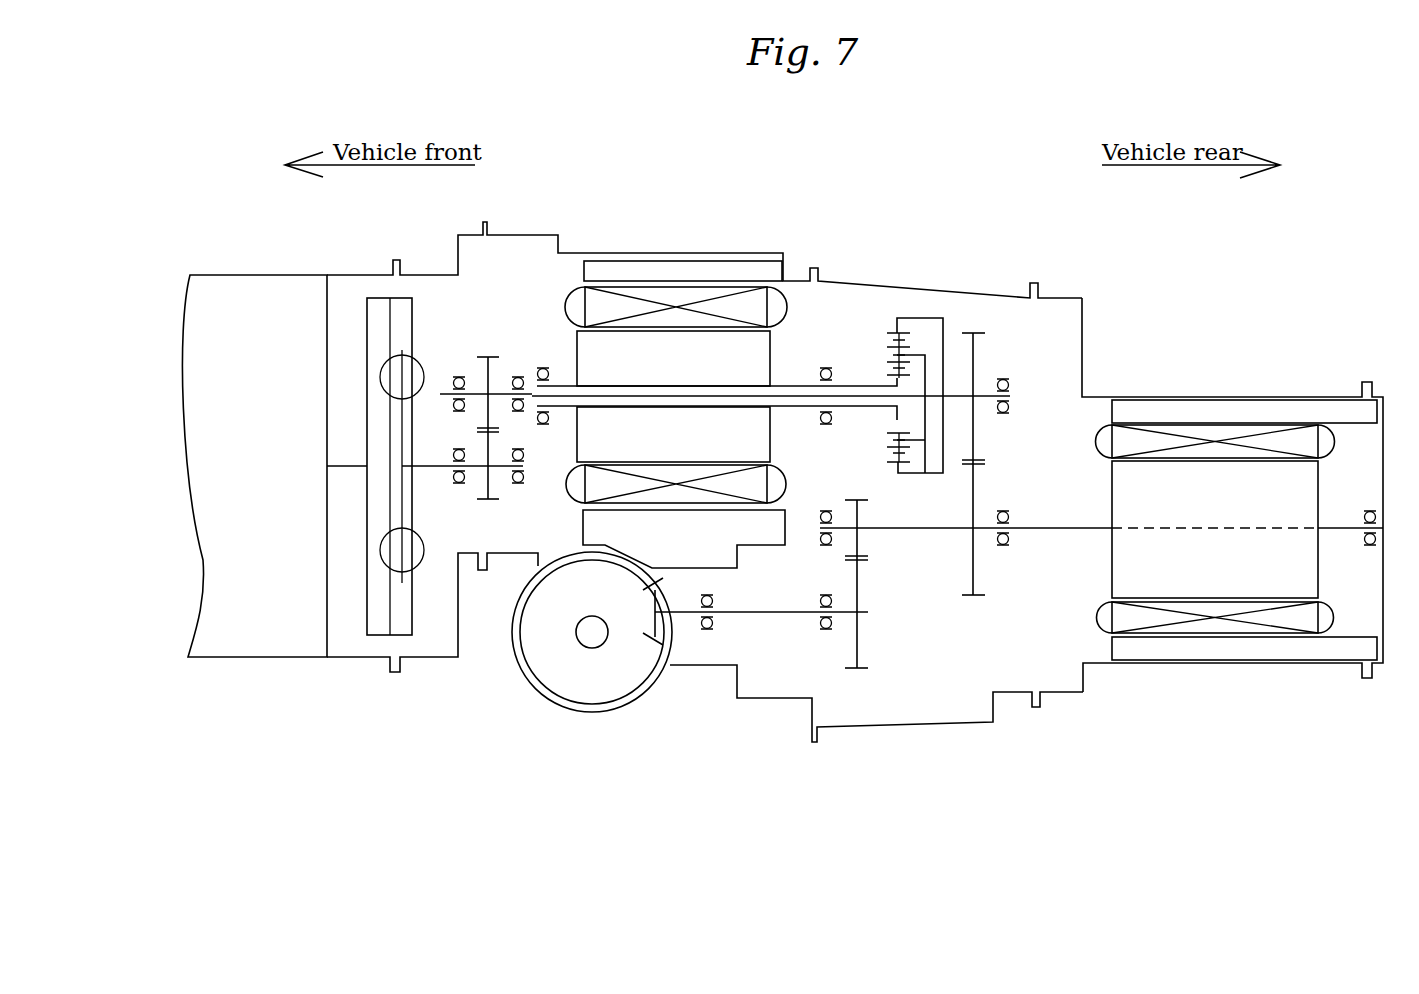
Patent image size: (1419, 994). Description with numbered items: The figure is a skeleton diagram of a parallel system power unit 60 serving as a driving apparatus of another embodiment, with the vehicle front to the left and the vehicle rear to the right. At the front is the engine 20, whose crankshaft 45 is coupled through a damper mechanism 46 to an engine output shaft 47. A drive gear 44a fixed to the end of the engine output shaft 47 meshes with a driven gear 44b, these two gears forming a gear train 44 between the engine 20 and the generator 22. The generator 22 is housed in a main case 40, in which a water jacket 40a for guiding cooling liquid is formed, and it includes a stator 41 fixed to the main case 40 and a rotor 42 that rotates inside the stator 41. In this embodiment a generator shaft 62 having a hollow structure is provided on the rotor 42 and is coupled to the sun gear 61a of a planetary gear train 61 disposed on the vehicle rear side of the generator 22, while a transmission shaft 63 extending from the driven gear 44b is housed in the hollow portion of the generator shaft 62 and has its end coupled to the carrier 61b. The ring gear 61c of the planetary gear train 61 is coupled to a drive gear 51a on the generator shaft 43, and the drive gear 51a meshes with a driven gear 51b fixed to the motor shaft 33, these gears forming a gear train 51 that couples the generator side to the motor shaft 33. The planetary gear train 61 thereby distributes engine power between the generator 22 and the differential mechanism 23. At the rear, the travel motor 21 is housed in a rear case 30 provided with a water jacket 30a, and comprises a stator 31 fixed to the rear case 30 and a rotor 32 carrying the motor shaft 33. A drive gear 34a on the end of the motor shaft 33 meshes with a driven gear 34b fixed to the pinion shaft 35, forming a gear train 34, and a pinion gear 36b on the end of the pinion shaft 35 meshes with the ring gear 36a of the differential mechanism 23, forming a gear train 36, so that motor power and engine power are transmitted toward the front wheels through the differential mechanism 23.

The engine 20 is at (265, 612).
The travel motor 21 is at (1340, 299).
The generator 22 is at (795, 163).
The differential mechanism 23 is at (550, 695).
The rear case 30 is at (1103, 393).
The water jacket 30a is at (1155, 408).
The stator 31 is at (1292, 440).
The rotor 32 is at (1240, 490).
The motor shaft 33 is at (1063, 527).
The gear train 34 is at (847, 680).
The drive gear 34a is at (862, 498).
The driven gear 34b is at (860, 670).
The pinion shaft 35 is at (773, 615).
The gear train 36 is at (685, 651).
The ring gear 36a is at (583, 690).
The pinion gear 36b is at (650, 648).
The main case 40 is at (553, 235).
The water jacket 40a is at (652, 270).
The stator 41 is at (748, 305).
The rotor 42 is at (695, 360).
The generator shaft 43 is at (987, 395).
The gear train 44 is at (495, 352).
The drive gear 44a is at (495, 502).
The driven gear 44b is at (481, 357).
The crankshaft 45 is at (347, 463).
The damper mechanism 46 is at (368, 642).
The engine output shaft 47 is at (432, 468).
The gear train 51 is at (966, 326).
The drive gear 51a is at (981, 332).
The driven gear 51b is at (972, 597).
The parallel system power unit 60 is at (260, 208).
The planetary gear train 61 is at (912, 310).
The sun gear 61a is at (895, 383).
The carrier 61b is at (922, 476).
The ring gear 61c is at (892, 332).
The generator shaft 62 is at (795, 385).
The transmission shaft 63 is at (568, 393).